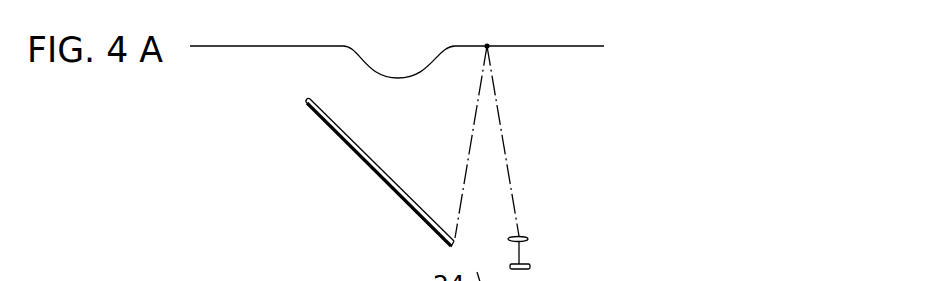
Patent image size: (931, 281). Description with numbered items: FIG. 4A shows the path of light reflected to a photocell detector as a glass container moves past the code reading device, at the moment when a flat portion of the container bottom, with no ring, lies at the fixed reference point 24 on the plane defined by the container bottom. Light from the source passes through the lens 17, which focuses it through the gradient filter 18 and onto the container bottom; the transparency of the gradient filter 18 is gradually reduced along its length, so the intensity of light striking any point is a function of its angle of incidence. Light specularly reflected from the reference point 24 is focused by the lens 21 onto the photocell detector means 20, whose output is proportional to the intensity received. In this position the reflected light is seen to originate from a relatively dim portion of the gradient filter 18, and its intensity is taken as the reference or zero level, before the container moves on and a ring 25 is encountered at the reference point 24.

The lens 17 is at (328, 127).
The gradient filter 18 is at (308, 101).
The photocell detector means 20 is at (531, 266).
The lens 21 is at (530, 237).
The reference point 24 is at (489, 45).
The ring 25 is at (373, 71).